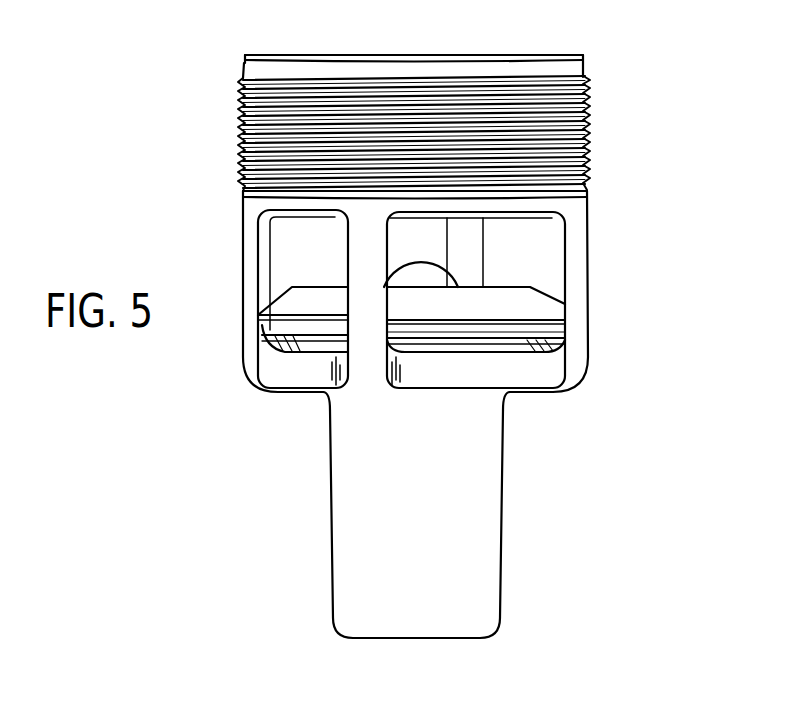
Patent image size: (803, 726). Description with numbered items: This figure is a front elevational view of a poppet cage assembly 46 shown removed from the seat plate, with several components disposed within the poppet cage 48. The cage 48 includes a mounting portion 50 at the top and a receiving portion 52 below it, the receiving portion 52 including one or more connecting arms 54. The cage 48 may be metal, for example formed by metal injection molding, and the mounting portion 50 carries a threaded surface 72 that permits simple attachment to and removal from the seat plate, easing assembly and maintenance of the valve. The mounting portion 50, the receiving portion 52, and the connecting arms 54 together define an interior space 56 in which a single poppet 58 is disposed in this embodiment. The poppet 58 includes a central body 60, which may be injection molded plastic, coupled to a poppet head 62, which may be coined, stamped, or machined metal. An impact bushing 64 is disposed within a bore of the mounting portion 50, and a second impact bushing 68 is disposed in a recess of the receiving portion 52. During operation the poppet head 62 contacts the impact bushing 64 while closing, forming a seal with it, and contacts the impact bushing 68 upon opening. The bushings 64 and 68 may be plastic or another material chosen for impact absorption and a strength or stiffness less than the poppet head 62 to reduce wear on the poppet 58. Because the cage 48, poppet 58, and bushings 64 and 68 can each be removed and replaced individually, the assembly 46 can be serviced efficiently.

The poppet cage assembly 46 is at (630, 72).
The poppet cage 48 is at (252, 410).
The mounting portion 50 is at (212, 115).
The receiving portion 52 is at (487, 530).
The connecting arms 54 is at (250, 237).
The interior space 56 is at (300, 248).
The poppet 58 is at (277, 292).
The central body 60 is at (420, 270).
The poppet head 62 is at (497, 302).
The impact bushing 64 is at (248, 70).
The impact bushing 68 is at (505, 345).
The threaded surface 72 is at (588, 127).